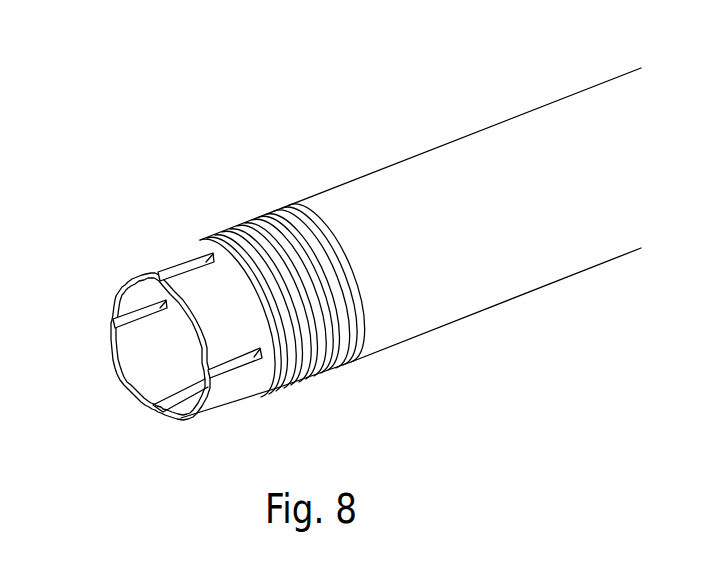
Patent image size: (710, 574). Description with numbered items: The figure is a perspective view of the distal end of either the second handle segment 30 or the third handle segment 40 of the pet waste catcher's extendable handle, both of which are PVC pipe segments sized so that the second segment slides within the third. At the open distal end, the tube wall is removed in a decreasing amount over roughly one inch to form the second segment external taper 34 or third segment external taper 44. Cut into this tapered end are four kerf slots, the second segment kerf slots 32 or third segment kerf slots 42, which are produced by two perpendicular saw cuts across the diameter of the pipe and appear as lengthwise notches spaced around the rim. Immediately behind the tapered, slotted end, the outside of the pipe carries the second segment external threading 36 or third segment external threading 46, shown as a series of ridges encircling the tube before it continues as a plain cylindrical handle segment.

The second handle segment 30 is at (376, 244).
The third handle segment 40 is at (430, 183).
The second segment kerf slots 32 is at (149, 379).
The third segment kerf slots 42 is at (113, 325).
The second segment external taper 34 is at (158, 243).
The third segment external taper 44 is at (170, 266).
The second segment external threading 36 is at (314, 314).
The third segment external threading 46 is at (317, 377).